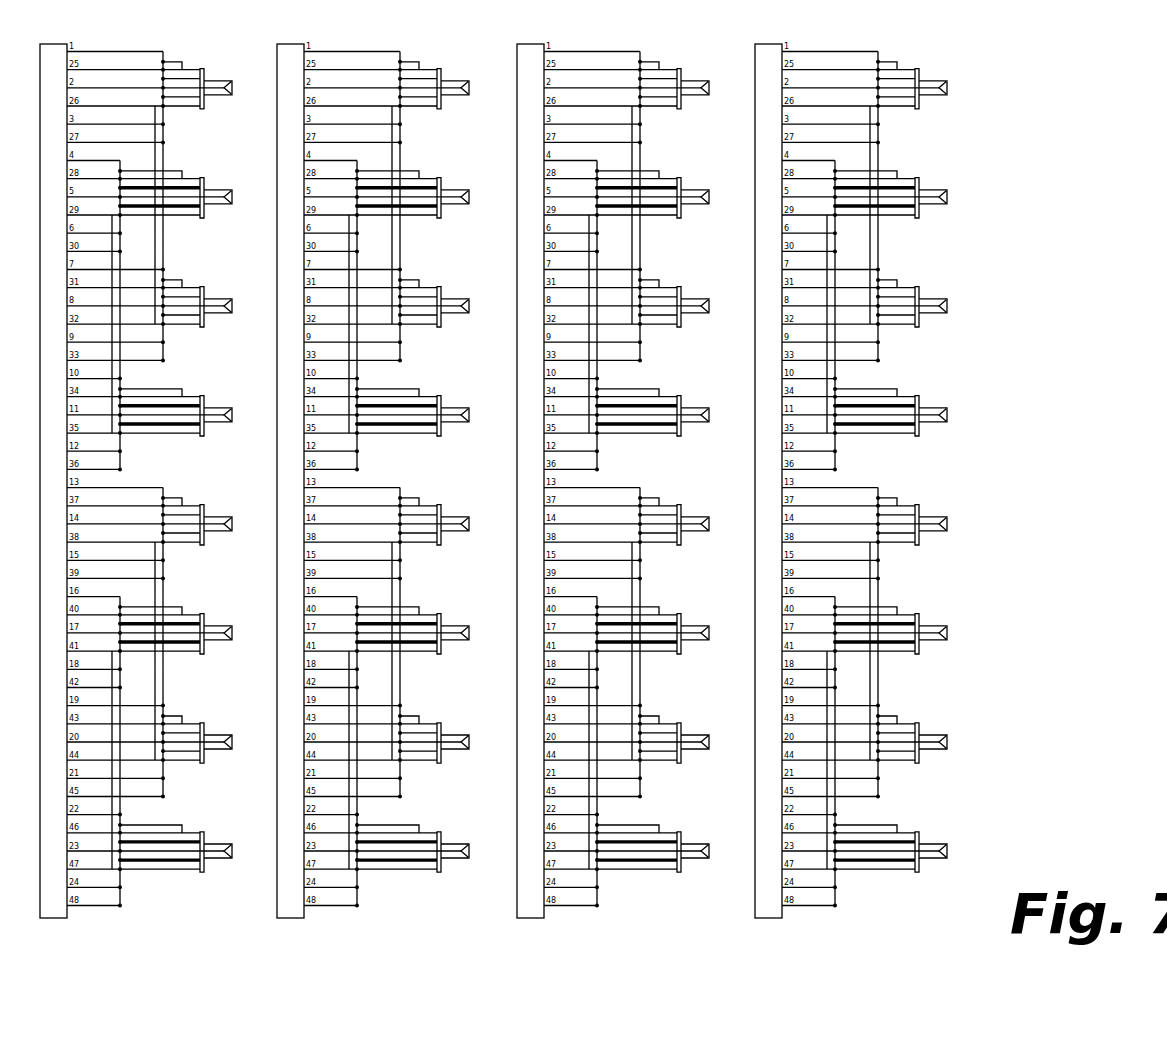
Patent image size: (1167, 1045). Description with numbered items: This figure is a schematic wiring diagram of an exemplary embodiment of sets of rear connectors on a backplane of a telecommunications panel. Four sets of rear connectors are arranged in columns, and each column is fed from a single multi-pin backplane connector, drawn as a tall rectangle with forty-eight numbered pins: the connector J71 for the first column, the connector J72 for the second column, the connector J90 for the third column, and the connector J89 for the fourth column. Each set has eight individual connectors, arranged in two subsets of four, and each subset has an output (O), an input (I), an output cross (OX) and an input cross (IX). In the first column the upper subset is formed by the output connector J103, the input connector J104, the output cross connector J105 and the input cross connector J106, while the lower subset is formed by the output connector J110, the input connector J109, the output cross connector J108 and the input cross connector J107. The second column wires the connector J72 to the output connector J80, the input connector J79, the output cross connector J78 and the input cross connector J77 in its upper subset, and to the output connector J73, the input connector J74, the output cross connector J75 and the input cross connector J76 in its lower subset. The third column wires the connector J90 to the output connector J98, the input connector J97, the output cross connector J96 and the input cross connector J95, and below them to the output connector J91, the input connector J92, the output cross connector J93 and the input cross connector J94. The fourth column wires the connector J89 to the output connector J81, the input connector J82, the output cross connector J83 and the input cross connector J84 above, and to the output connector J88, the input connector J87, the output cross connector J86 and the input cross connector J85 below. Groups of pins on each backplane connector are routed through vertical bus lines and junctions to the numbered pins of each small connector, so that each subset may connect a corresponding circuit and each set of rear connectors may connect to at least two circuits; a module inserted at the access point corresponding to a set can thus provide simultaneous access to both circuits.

The 48-pin connector J71 is at (53, 474).
The 48-pin connector J72 is at (290, 474).
The 48-pin connector J90 is at (530, 474).
The 48-pin connector J89 is at (768, 474).
The output connector O J103 is at (222, 85).
The input connector I J104 is at (218, 194).
The output connector OX J105 is at (227, 303).
The input connector IX J106 is at (224, 412).
The output connector O J110 is at (222, 521).
The input connector I J109 is at (218, 630).
The output connector OX J108 is at (227, 739).
The input connector IX J107 is at (224, 848).
The output connector O J80 is at (459, 85).
The input connector I J79 is at (455, 194).
The output connector OX J78 is at (464, 303).
The input connector IX J77 is at (461, 412).
The output connector O J73 is at (459, 521).
The input connector I J74 is at (455, 630).
The output connector OX J75 is at (464, 739).
The input connector IX J76 is at (461, 848).
The output connector O J98 is at (699, 85).
The input connector I J97 is at (695, 194).
The output connector OX J96 is at (704, 303).
The input connector IX J95 is at (701, 412).
The output connector O J91 is at (699, 521).
The input connector I J92 is at (695, 630).
The output connector OX J93 is at (704, 739).
The input connector IX J94 is at (701, 848).
The output connector O J81 is at (937, 85).
The input connector I J82 is at (933, 194).
The output connector OX J83 is at (942, 303).
The input connector IX J84 is at (939, 412).
The output connector O J88 is at (937, 521).
The input connector I J87 is at (933, 630).
The output connector OX J86 is at (942, 739).
The input connector IX J85 is at (939, 848).